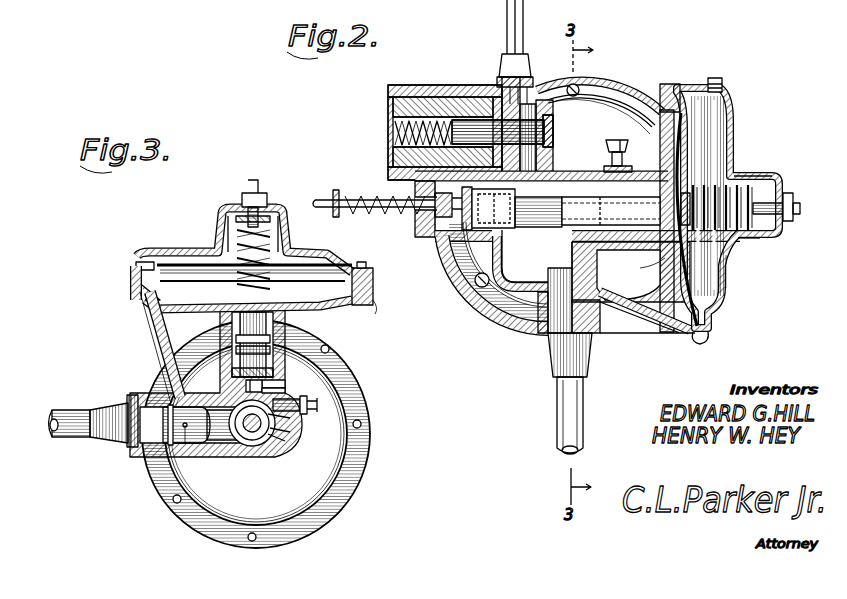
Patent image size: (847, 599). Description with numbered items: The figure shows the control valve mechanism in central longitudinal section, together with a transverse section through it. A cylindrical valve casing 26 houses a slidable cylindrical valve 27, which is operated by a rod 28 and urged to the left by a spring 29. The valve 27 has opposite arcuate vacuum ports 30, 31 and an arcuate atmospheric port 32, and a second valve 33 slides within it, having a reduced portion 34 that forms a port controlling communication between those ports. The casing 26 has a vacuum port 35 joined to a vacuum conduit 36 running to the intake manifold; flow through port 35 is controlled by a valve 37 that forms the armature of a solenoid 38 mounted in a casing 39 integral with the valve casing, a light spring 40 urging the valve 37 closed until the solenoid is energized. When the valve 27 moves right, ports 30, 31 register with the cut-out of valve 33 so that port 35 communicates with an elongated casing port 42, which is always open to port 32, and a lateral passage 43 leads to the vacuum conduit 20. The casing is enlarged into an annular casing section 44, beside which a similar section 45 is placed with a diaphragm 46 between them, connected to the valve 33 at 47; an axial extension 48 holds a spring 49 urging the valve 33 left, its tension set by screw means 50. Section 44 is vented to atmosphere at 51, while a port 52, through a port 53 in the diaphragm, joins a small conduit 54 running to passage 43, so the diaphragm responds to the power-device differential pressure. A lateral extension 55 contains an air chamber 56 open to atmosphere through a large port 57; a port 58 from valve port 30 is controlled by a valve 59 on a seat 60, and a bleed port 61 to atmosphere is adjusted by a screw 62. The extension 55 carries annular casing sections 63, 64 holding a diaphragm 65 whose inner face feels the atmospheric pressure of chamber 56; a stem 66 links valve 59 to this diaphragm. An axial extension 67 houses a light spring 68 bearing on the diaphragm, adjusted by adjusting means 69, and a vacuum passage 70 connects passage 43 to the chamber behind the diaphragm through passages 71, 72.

In FIG. 2, the vacuum conduit 20 is at (552, 400).
In FIG. 3, the vacuum conduit 20 is at (88, 404).
In FIG. 2, the valve casing 26 is at (640, 171).
In FIG. 3, the valve casing 26 is at (276, 446).
In FIG. 2, the cylindrical valve 27 is at (631, 272).
In FIG. 3, the cylindrical valve 27 is at (260, 447).
In FIG. 2, the rod 28 is at (331, 198).
In FIG. 2, the spring 29 is at (394, 214).
In FIG. 2, the arcuate vacuum port 30 is at (508, 144).
In FIG. 2, the arcuate vacuum port 31 is at (460, 266).
In FIG. 2, the arcuate atmospheric port 32 is at (552, 230).
In FIG. 3, the arcuate atmospheric port 32 is at (225, 445).
In FIG. 2, the second valve 33 is at (618, 174).
In FIG. 3, the second valve 33 is at (286, 442).
In FIG. 2, the reduced portion 34 is at (548, 244).
In FIG. 3, the reduced portion 34 is at (290, 433).
In FIG. 2, the vacuum port 35 is at (608, 142).
In FIG. 3, the vacuum port 35 is at (292, 418).
In FIG. 2, the vacuum conduit 36 is at (507, 35).
In FIG. 2, the valve 37 is at (541, 108).
In FIG. 2, the solenoid 38 is at (443, 97).
In FIG. 2, the casing 39 is at (408, 85).
In FIG. 2, the light spring 40 is at (392, 138).
In FIG. 2, the port 42 is at (488, 298).
In FIG. 3, the port 42 is at (205, 445).
In FIG. 2, the laterally extending passage 43 is at (520, 318).
In FIG. 3, the laterally extending passage 43 is at (178, 445).
In FIG. 2, the annular casing section 44 is at (680, 84).
In FIG. 3, the annular casing section 44 is at (368, 404).
In FIG. 2, the annular casing section 45 is at (733, 118).
In FIG. 2, the diaphragm 46 is at (712, 78).
In FIG. 2, the connection 47 is at (720, 172).
In FIG. 2, the axial extension 48 is at (766, 176).
In FIG. 2, the spring 49 is at (745, 246).
In FIG. 2, the screw means 50 is at (796, 200).
In FIG. 2, the vent 51 is at (663, 112).
In FIG. 2, the port 52 is at (716, 318).
In FIG. 2, the port 53 is at (700, 340).
In FIG. 2, the small conduit 54 is at (660, 330).
In FIG. 3, the small conduit 54 is at (150, 393).
In FIG. 3, the lateral extension 55 is at (333, 340).
In FIG. 3, the air chamber 56 is at (232, 342).
In FIG. 3, the port 57 is at (232, 360).
In FIG. 3, the port 58 is at (278, 384).
In FIG. 3, the valve 59 is at (232, 378).
In FIG. 3, the seat 60 is at (286, 376).
In FIG. 3, the bleed port 61 is at (286, 390).
In FIG. 2, the screw 62 is at (618, 140).
In FIG. 3, the screw 62 is at (310, 398).
In FIG. 3, the annular casing section 63 is at (376, 310).
In FIG. 3, the casing section 64 is at (324, 252).
In FIG. 3, the diaphragm 65 is at (376, 288).
In FIG. 3, the stem 66 is at (274, 336).
In FIG. 3, the axial extension 67 is at (217, 236).
In FIG. 3, the light spring 68 is at (272, 236).
In FIG. 3, the adjusting means 69 is at (249, 188).
In FIG. 2, the vacuum passage 70 is at (562, 272).
In FIG. 3, the vacuum passage 70 is at (156, 348).
In FIG. 3, the passage 71 is at (130, 286).
In FIG. 3, the passage 72 is at (147, 262).